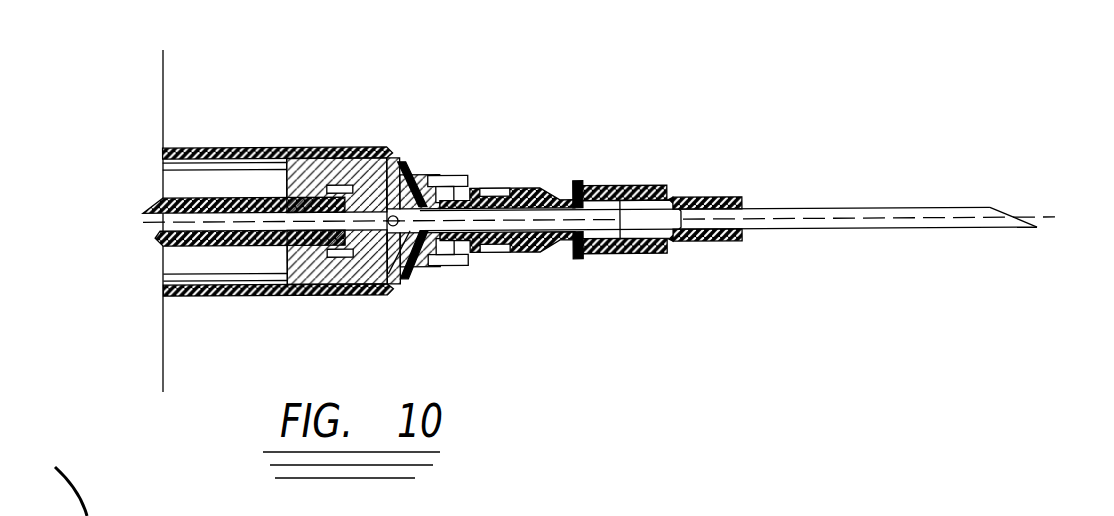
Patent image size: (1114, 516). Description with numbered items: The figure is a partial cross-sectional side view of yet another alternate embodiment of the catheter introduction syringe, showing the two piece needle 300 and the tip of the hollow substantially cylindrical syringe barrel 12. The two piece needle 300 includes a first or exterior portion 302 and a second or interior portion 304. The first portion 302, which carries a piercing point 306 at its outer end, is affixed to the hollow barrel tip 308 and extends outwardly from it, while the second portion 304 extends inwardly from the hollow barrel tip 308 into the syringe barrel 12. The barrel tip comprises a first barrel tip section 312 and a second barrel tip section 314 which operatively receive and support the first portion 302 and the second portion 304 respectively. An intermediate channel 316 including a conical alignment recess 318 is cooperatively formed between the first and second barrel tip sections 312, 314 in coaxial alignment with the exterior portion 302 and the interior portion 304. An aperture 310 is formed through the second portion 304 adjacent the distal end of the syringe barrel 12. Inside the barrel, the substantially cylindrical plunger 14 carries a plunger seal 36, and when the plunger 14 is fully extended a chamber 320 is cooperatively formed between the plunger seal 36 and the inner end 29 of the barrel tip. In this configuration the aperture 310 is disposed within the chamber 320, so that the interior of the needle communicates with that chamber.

The syringe barrel 12 is at (295, 124).
The plunger 14 is at (193, 253).
The plunger seal 36 is at (330, 273).
The inner end of the hollow barrel tip 29 is at (393, 228).
The aperture 310 is at (415, 272).
The chamber 320 is at (393, 188).
The second or interior portion 304 is at (490, 210).
The hollow barrel tip 308 is at (598, 158).
The second barrel tip section 314 is at (517, 246).
The two piece needle 300 is at (638, 158).
The conical alignment recess 318 is at (672, 202).
The intermediate channel 316 is at (644, 238).
The first barrel tip section 312 is at (723, 238).
The first or exterior portion 302 is at (853, 208).
The piercing point 306 is at (1037, 230).